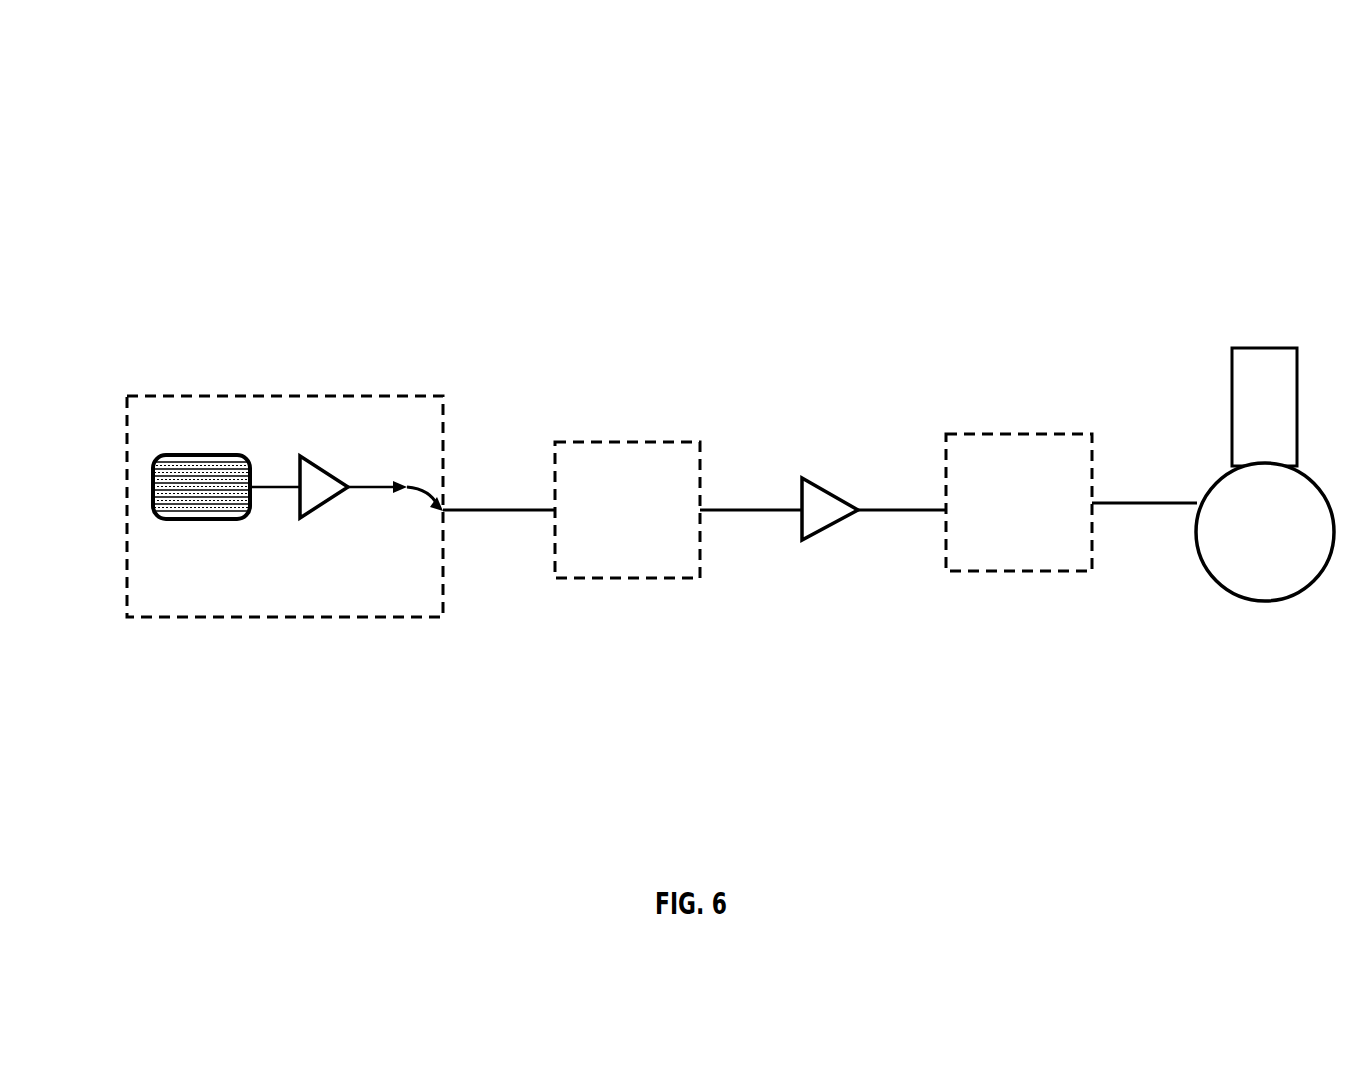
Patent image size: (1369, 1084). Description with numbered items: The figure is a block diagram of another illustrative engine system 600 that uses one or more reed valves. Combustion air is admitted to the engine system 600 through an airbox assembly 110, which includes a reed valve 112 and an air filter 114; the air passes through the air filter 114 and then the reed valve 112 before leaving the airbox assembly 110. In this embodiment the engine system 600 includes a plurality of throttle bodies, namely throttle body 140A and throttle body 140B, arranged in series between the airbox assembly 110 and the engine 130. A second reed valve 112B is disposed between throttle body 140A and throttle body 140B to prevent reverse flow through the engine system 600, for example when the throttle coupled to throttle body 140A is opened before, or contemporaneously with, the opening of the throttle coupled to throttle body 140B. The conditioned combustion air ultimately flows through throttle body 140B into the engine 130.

The engine system 600 is at (1264, 110).
The airbox assembly 110 is at (130, 615).
The air filter 114 is at (201, 521).
The reed valve 112 is at (323, 512).
The throttle body 140A is at (627, 510).
The second reed valve 112B is at (830, 530).
The throttle body 140B is at (1019, 502).
The engine 130 is at (1249, 543).